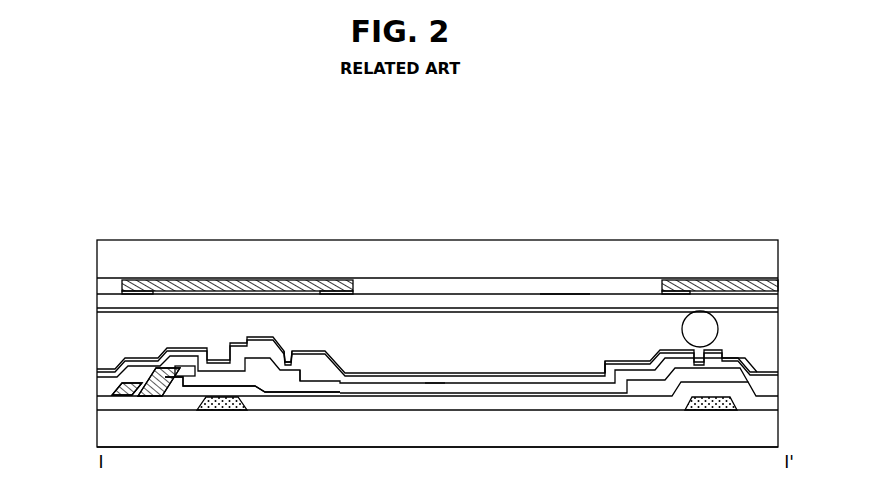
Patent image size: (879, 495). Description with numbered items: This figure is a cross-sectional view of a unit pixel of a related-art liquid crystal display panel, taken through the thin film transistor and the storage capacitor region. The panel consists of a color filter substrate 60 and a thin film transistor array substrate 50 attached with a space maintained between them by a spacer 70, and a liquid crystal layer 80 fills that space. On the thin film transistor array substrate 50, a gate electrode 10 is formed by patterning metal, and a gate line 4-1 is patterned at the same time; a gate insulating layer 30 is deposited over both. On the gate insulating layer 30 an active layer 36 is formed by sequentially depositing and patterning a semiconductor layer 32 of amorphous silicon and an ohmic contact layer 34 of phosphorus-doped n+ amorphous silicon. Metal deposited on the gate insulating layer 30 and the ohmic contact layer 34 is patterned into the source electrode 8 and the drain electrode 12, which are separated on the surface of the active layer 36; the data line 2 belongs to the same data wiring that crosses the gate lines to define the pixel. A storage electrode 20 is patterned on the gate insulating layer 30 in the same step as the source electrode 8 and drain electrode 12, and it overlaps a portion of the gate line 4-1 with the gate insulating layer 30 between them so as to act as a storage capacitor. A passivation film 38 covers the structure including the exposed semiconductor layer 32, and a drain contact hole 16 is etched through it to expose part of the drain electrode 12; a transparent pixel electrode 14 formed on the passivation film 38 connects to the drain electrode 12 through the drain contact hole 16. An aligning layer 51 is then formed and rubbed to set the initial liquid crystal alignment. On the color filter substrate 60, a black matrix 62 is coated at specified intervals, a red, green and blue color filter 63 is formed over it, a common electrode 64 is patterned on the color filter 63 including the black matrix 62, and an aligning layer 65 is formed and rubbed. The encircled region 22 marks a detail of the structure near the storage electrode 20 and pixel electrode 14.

The color filter substrate 60 is at (760, 251).
The black matrix 62 is at (775, 284).
The common electrode 64 is at (772, 294).
The aligning layer 65 is at (770, 310).
The spacer 70 is at (722, 334).
The liquid crystal layer 80 is at (762, 351).
The storage electrode 20 is at (748, 378).
The passivation film 38 is at (172, 352).
The data line 2 is at (163, 357).
The source electrode 8 is at (163, 357).
The active layer 36 is at (43, 351).
The ohmic contact layer 34 is at (130, 378).
The semiconductor layer 32 is at (118, 388).
The gate insulating layer 30 is at (110, 395).
The gate electrode 10 is at (200, 406).
The gate line 4-1 is at (742, 404).
The thin film transistor array substrate 50 is at (760, 431).
The drain contact hole 16 is at (288, 338).
The drain electrode 12 is at (303, 356).
The pixel electrode 14 is at (433, 382).
The color filter 63 is at (562, 285).
The aligning layer 51 is at (600, 362).
The contact portion 22 is at (697, 340).